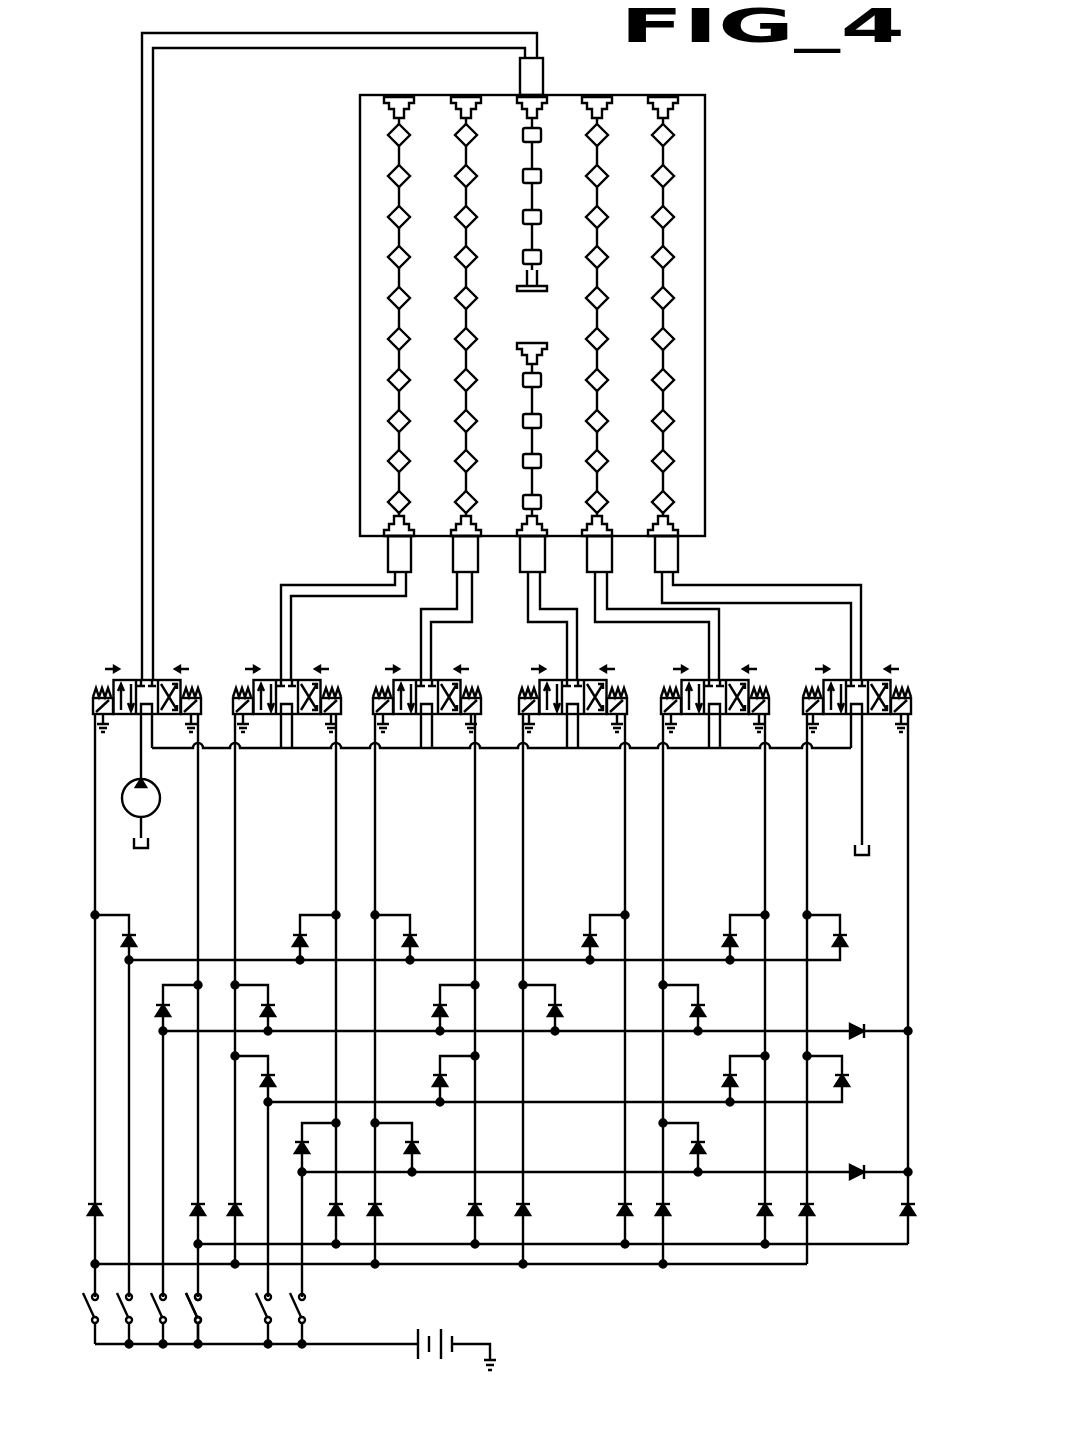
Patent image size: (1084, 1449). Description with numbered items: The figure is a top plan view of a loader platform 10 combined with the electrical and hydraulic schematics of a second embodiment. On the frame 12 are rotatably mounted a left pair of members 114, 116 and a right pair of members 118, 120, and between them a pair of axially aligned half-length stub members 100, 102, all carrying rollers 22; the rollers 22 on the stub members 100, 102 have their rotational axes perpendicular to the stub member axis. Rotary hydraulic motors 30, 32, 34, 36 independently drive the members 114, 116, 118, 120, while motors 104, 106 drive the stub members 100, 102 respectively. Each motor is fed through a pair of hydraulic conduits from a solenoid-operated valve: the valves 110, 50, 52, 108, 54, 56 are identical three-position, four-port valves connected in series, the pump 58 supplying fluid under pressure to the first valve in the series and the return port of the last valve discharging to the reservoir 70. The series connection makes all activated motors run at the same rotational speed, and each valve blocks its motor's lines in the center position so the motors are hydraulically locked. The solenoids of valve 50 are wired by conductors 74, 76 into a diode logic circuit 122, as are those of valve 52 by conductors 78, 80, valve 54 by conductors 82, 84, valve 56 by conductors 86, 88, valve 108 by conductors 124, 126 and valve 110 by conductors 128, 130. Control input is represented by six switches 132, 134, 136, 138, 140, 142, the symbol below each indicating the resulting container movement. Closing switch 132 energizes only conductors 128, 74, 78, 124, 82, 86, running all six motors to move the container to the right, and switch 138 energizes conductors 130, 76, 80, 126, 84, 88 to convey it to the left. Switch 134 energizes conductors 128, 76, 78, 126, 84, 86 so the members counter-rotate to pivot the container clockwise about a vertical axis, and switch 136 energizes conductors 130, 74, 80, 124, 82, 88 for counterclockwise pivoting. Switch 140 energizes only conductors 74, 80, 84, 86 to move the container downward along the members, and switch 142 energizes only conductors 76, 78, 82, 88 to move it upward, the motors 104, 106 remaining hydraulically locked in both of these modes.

The loader platform 10 is at (718, 191).
The frame 12 is at (535, 294).
The rollers 22 is at (541, 135).
The rotary hydraulic motor 30 is at (388, 553).
The rotary hydraulic motor 32 is at (454, 576).
The rotary hydraulic motor 34 is at (609, 576).
The rotary hydraulic motor 36 is at (678, 553).
The valve 50 is at (271, 675).
The valve 52 is at (411, 675).
The valve 54 is at (701, 675).
The valve 56 is at (843, 675).
The pump 58 is at (160, 803).
The reservoir 70 is at (137, 850).
The conductor 74 is at (236, 878).
The conductor 76 is at (335, 837).
The conductor 78 is at (376, 845).
The conductor 80 is at (474, 874).
The conductor 82 is at (664, 836).
The conductor 84 is at (764, 863).
The conductor 86 is at (808, 812).
The conductor 88 is at (908, 886).
The stub member 100 is at (540, 438).
The stub member 102 is at (539, 237).
The rotary hydraulic motor 104 is at (524, 576).
The rotary hydraulic motor 106 is at (545, 72).
The valve 108 is at (557, 675).
The valve 110 is at (157, 678).
The member 114 is at (392, 197).
The member 116 is at (464, 238).
The member 118 is at (600, 240).
The member 120 is at (668, 275).
The logic circuit 122 is at (720, 1290).
The conductor 124 is at (524, 836).
The conductor 126 is at (624, 863).
The conductor 128 is at (96, 894).
The conductor 130 is at (197, 946).
The switch 132 is at (85, 1302).
The switch 134 is at (120, 1302).
The switch 136 is at (187, 1302).
The switch 138 is at (205, 1310).
The switch 140 is at (270, 1380).
The switch 142 is at (302, 1380).